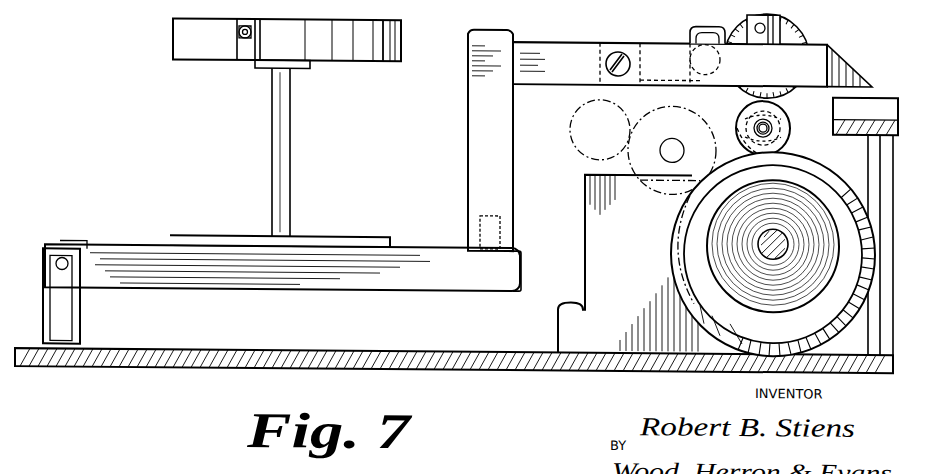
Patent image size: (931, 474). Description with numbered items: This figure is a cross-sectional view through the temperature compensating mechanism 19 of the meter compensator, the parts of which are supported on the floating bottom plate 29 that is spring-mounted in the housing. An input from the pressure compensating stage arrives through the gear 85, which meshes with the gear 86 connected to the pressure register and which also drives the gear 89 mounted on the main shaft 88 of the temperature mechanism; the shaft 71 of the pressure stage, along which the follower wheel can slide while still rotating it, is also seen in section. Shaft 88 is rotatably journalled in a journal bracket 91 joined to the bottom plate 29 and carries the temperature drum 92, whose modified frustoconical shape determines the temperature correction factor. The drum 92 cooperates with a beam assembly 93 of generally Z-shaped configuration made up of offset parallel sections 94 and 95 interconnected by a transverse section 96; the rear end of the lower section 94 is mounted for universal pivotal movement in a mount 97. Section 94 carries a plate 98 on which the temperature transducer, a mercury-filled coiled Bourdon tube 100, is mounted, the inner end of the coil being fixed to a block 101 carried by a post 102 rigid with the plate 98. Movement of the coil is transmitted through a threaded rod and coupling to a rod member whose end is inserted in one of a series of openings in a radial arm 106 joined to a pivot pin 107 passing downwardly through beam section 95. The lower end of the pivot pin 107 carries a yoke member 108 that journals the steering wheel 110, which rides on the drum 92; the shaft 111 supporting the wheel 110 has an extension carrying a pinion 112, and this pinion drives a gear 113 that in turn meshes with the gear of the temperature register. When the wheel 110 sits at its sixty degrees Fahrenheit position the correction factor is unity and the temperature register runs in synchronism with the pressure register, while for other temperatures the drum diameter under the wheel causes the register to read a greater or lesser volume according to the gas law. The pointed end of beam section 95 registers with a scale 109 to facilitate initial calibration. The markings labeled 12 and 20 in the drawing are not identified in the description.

The section line indicator 12 is at (763, 150).
The temperature compensating mechanism 19 is at (130, 112).
The upper bar 20 is at (302, 30).
The floating bottom plate 29 is at (518, 367).
The shaft 71 is at (672, 150).
The gear 85 is at (658, 190).
The gear 86 is at (572, 142).
The main shaft 88 is at (760, 233).
The gear 89 is at (683, 250).
The journal bracket 91 is at (628, 263).
The temperature drum 92 is at (668, 251).
The beam assembly 93 is at (467, 144).
The beam section 94 is at (332, 280).
The beam section 95 is at (560, 46).
The transverse section 96 is at (501, 158).
The mount 97 is at (86, 230).
The plate 98 is at (320, 234).
The coiled Bourdon tube 100 is at (373, 60).
The block 101 is at (311, 66).
The post 102 is at (292, 147).
The radial arm 106 is at (800, 36).
The pivot pin 107 is at (723, 96).
The yoke member 108 is at (790, 119).
The scale 109 is at (880, 104).
The steering wheel 110 is at (775, 139).
The shaft 111 is at (757, 122).
The pinion 112 is at (745, 111).
The gear 113 is at (781, 28).